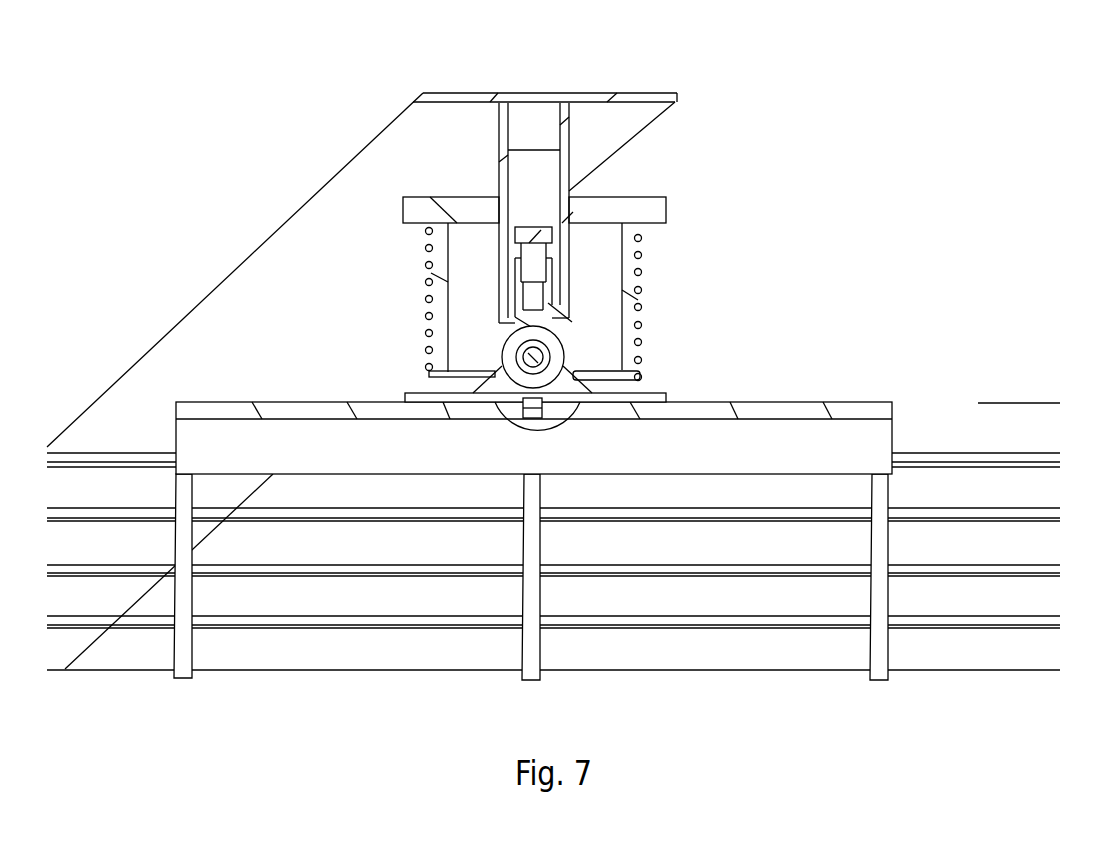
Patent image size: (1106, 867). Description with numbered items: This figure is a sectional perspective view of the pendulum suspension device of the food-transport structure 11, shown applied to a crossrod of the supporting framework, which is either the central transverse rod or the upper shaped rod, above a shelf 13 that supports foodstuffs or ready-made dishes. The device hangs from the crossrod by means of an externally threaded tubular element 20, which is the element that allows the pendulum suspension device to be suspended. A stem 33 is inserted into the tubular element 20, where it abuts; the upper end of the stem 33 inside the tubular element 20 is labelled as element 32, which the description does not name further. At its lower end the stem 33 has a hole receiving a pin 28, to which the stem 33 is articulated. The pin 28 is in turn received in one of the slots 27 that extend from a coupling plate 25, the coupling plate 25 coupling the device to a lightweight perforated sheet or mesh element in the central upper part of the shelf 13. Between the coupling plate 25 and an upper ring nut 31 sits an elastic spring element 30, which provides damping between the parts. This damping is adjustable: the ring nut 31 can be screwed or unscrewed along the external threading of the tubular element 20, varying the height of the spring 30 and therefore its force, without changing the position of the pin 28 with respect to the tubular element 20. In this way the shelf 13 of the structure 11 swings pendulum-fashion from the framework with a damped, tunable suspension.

The structure 11 is at (960, 374).
The shelf 13 is at (857, 406).
The tubular element 20 is at (566, 136).
The coupling plate 25 is at (630, 398).
The slots 27 is at (500, 372).
The pin 28 is at (543, 356).
The elastic spring element 30 is at (442, 303).
The upper ring nut 31 is at (468, 208).
The head 32 is at (530, 226).
The stem 33 is at (540, 325).